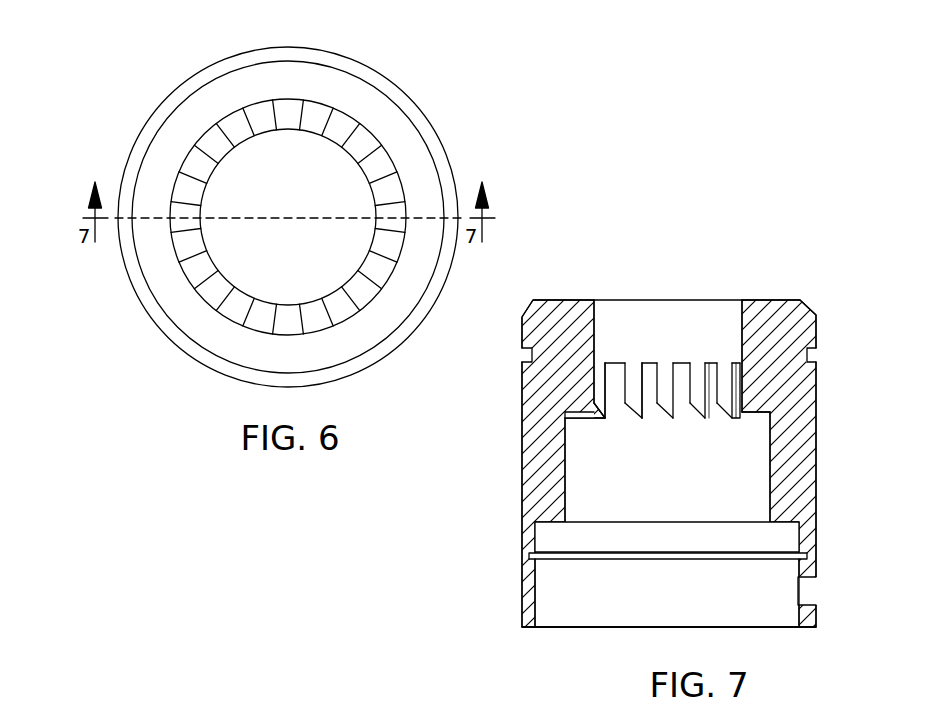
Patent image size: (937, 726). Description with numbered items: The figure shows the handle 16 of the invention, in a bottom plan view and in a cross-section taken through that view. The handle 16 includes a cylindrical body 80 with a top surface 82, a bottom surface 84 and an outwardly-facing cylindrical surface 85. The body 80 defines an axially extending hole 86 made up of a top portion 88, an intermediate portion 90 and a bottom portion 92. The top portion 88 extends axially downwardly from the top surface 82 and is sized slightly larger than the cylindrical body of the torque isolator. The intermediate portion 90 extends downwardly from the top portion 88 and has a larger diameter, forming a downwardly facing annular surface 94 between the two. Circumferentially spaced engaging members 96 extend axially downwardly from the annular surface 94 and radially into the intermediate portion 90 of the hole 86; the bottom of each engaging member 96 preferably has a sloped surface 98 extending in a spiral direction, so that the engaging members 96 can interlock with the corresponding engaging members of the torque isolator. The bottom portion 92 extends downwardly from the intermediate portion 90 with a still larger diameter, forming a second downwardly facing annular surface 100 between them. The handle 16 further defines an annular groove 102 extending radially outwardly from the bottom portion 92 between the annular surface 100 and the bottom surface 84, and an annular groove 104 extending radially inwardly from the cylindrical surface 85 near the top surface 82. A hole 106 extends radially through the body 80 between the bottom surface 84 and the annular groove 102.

In FIG. 6, the handle 16 is at (150, 80).
In FIG. 7, the handle 16 is at (661, 258).
In FIG. 7, the cylindrical body 80 is at (832, 370).
In FIG. 7, the top surface 82 is at (752, 298).
In FIG. 6, the bottom surface 84 is at (338, 62).
In FIG. 7, the bottom surface 84 is at (810, 628).
In FIG. 6, the outwardly-facing cylindrical surface 85 is at (405, 82).
In FIG. 7, the outwardly-facing cylindrical surface 85 is at (521, 532).
In FIG. 7, the axially extending hole 86 is at (610, 598).
In FIG. 7, the top portion 88 is at (720, 322).
In FIG. 7, the intermediate portion 90 is at (605, 484).
In FIG. 7, the bottom portion 92 is at (725, 611).
In FIG. 7, the downwardly facing annular surface 94 is at (623, 364).
In FIG. 6, the engaging members 96 is at (393, 217).
In FIG. 7, the engaging members 96 is at (698, 388).
In FIG. 7, the sloped surface 98 is at (690, 413).
In FIG. 6, the downwardly facing annular surface 100 is at (405, 157).
In FIG. 7, the downwardly facing annular surface 100 is at (773, 523).
In FIG. 7, the annular groove 102 is at (555, 560).
In FIG. 7, the annular groove 104 is at (521, 355).
In FIG. 7, the hole 106 is at (810, 590).